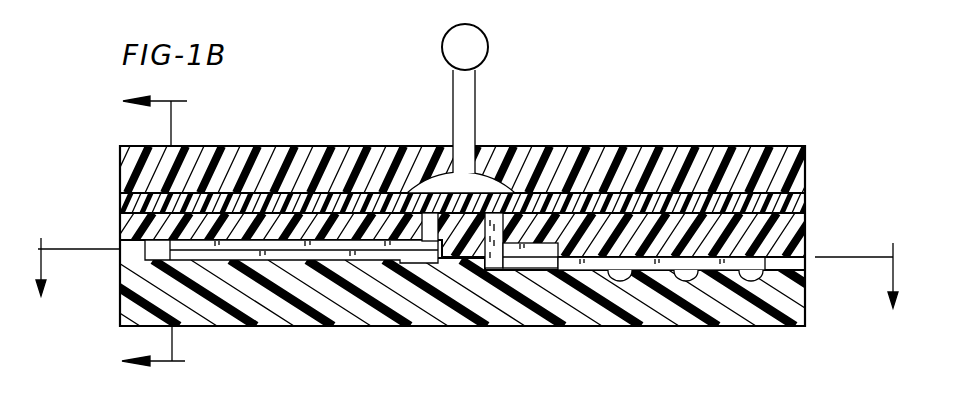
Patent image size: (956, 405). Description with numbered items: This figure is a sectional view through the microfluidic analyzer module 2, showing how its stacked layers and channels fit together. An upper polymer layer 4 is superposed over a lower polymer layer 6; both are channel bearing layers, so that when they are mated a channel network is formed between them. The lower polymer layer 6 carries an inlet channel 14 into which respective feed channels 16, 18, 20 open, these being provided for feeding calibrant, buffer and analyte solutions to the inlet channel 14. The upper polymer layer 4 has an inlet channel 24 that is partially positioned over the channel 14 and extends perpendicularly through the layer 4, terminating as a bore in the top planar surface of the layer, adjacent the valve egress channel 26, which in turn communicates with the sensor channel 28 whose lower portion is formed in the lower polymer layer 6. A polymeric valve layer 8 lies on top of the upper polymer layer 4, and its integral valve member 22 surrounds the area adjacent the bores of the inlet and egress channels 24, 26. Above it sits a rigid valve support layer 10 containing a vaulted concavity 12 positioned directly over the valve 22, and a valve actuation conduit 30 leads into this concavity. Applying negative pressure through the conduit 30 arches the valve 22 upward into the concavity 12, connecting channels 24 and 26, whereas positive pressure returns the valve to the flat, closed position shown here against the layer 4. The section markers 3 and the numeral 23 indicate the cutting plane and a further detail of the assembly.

The microfluidic analyzer module 2 is at (748, 84).
The section line 3- 3 is at (163, 232).
The upper polymer layer 4 is at (805, 238).
The lower polymer layer 6 is at (805, 325).
The polymeric valve layer 8 is at (805, 195).
The valve support layer 10 is at (226, 146).
The vaulted concavity 12 is at (472, 187).
The inlet channel 14 is at (550, 270).
The feed channel 16 is at (750, 275).
The feed channel 18 is at (688, 258).
The feed channel 20 is at (620, 258).
The valve member 22 is at (424, 165).
The conductive via 23 is at (553, 187).
The inlet channel 24 is at (493, 268).
The valve egress channel 26 is at (378, 186).
The sensor channel 28 is at (240, 265).
The valve actuation conduit 30 is at (468, 95).